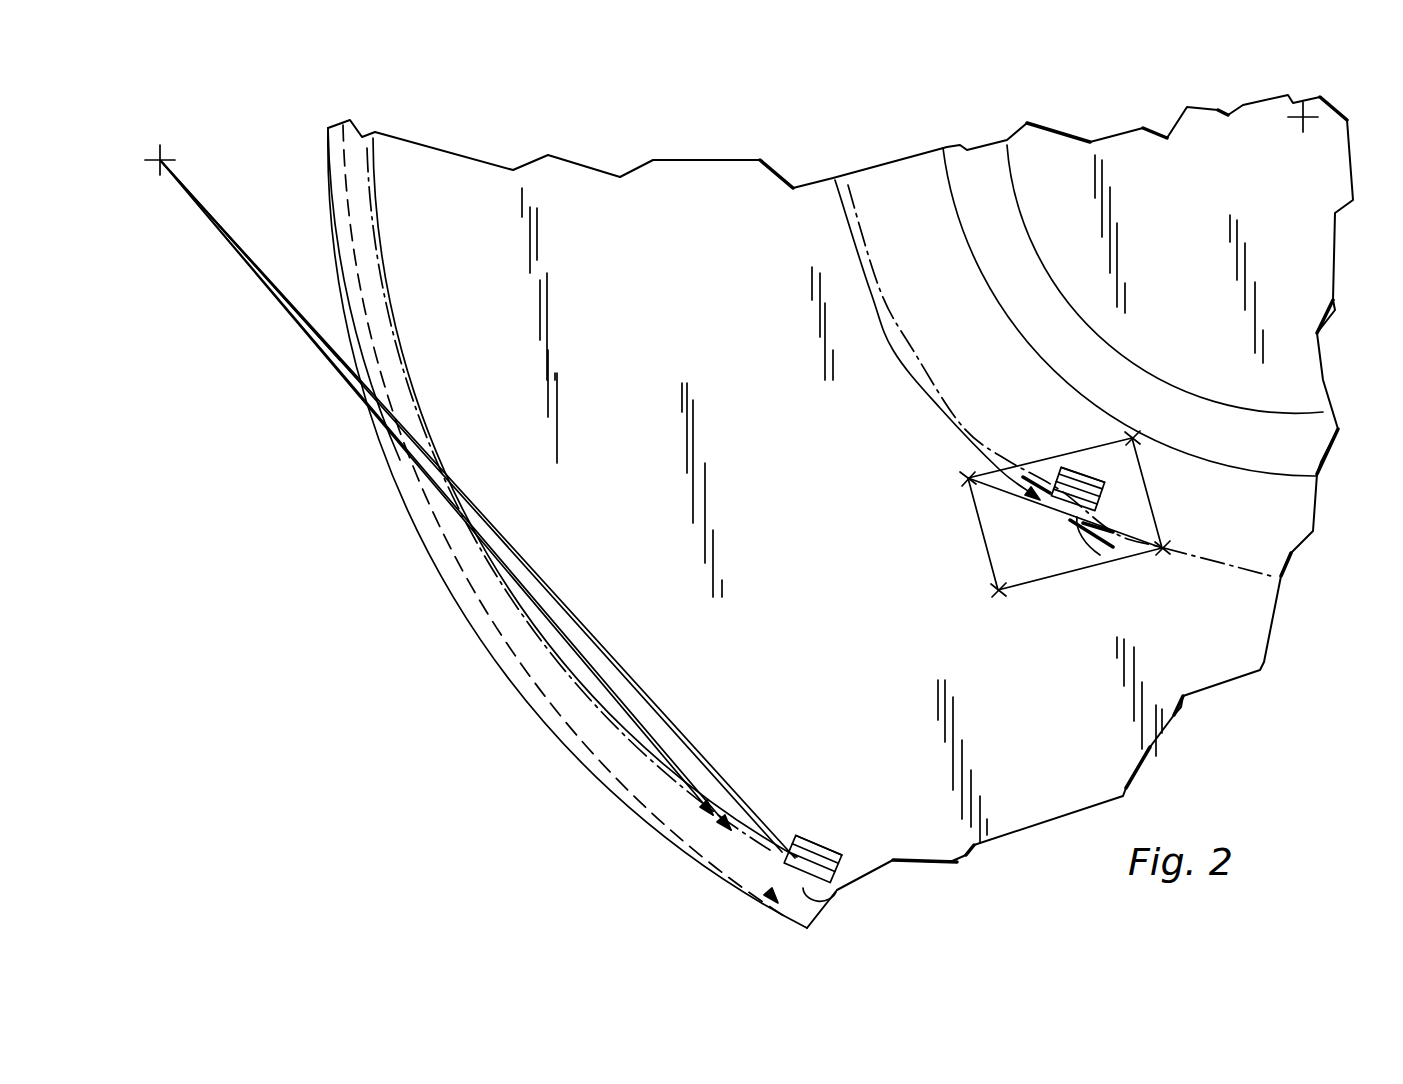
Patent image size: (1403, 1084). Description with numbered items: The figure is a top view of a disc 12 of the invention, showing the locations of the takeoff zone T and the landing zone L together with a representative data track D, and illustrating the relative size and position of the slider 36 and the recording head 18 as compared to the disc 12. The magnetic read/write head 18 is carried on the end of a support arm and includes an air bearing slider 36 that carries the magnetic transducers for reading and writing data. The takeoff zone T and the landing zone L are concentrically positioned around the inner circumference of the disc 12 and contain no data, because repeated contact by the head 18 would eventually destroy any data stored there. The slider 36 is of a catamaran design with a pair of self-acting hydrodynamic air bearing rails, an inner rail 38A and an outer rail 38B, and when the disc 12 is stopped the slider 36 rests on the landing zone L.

The disc 12 is at (576, 570).
The magnetic read/write head 18 is at (793, 845).
The air bearing slider 36 is at (1085, 492).
The inner rail 38A is at (1068, 473).
The outer rail 38B is at (1077, 512).
The data track D is at (407, 338).
The landing zone L is at (1003, 495).
The takeoff zone T is at (1020, 481).